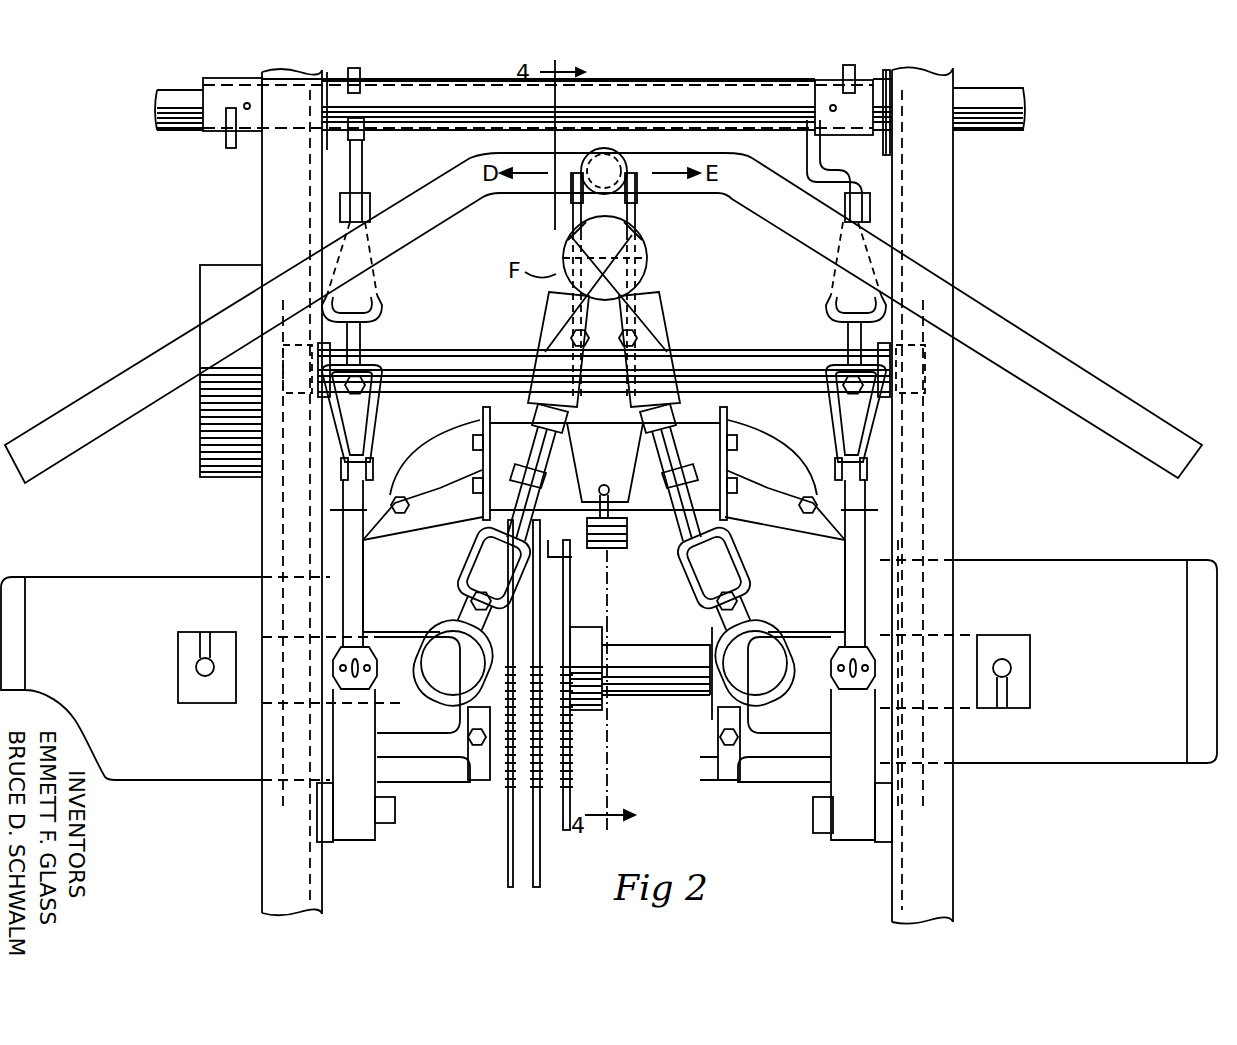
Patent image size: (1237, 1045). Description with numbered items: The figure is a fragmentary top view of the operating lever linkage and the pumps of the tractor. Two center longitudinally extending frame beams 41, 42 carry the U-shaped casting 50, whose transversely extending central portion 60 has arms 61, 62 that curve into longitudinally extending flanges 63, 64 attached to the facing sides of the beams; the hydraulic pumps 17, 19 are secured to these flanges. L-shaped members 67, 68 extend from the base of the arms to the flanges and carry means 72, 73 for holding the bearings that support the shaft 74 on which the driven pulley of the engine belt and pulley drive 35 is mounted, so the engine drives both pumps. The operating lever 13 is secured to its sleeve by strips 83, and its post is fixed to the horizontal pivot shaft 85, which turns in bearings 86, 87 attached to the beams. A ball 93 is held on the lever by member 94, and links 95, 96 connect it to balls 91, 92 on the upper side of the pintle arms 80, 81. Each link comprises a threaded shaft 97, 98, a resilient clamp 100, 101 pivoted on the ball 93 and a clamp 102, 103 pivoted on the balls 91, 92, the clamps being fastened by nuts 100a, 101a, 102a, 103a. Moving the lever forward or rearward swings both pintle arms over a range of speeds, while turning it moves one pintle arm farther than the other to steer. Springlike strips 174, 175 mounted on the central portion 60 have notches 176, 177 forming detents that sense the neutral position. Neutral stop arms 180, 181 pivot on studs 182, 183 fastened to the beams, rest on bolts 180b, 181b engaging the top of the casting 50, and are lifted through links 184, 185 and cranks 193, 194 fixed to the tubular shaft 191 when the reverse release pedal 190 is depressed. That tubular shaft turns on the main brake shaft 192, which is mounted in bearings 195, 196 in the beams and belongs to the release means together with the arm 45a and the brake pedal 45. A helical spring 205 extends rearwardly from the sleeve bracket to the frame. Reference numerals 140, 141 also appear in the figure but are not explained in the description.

The operating lever 13 is at (1018, 340).
The hydraulic pump 17 is at (205, 782).
The hydraulic pump 19 is at (1055, 745).
The belt and pulley drive 35 is at (568, 582).
The center longitudinally extending frame beam 41 is at (262, 868).
The center longitudinally extending frame beam 42 is at (953, 860).
The brake pedal 45 is at (948, 64).
The arm 45a is at (228, 150).
The U-shaped casting 50 is at (763, 455).
The transversely extending central portion 60 is at (480, 420).
The arm 61 is at (378, 560).
The arm 62 is at (832, 560).
The longitudinally extending flange 63 is at (350, 835).
The longitudinally extending flange 64 is at (860, 835).
The L-shaped member 67 is at (462, 775).
The L-shaped member 68 is at (742, 770).
The bearing holding means 72 is at (478, 785).
The bearing holding means 73 is at (716, 712).
The shaft 74 is at (660, 680).
The pintle arm 80 is at (236, 635).
The pintle arm 81 is at (968, 640).
The strips 83 is at (573, 208).
The horizontal pivot shaft 85 is at (390, 352).
The bearing 86 is at (256, 480).
The bearing 87 is at (930, 407).
The ball 91 is at (450, 682).
The ball 92 is at (758, 692).
The ball 93 is at (648, 258).
The member 94 is at (575, 235).
The link 95 is at (510, 458).
The link 96 is at (700, 478).
The threaded shaft 97 is at (528, 522).
The threaded shaft 98 is at (700, 522).
The resilient clamp 100 is at (548, 352).
The nut 100a is at (572, 322).
The resilient clamp 101 is at (665, 362).
The nut 101a is at (638, 322).
The clamp 102 is at (522, 590).
The nut 102a is at (468, 602).
The clamp 103 is at (712, 585).
The nut 103a is at (740, 615).
The left pulley 140 is at (188, 677).
The right pulley 141 is at (1025, 660).
The springlike strip 174 is at (395, 822).
The springlike strip 175 is at (713, 778).
The notch 176 is at (515, 675).
The notch 177 is at (713, 706).
The neutral stop arm 180 is at (360, 512).
The bolt 180b is at (402, 513).
The neutral stop arm 181 is at (848, 510).
The bolt 181b is at (810, 500).
The pivot stud 182 is at (392, 840).
The pivot stud 183 is at (812, 822).
The link 184 is at (372, 278).
The link 185 is at (888, 432).
The reverse release pedal 190 is at (362, 78).
The tubular shaft 191 is at (618, 82).
The main brake shaft 192 is at (1000, 132).
The crank 193 is at (363, 180).
The crank 194 is at (806, 160).
The bearing 195 is at (356, 140).
The bearing 196 is at (880, 152).
The helical spring 205 is at (627, 545).